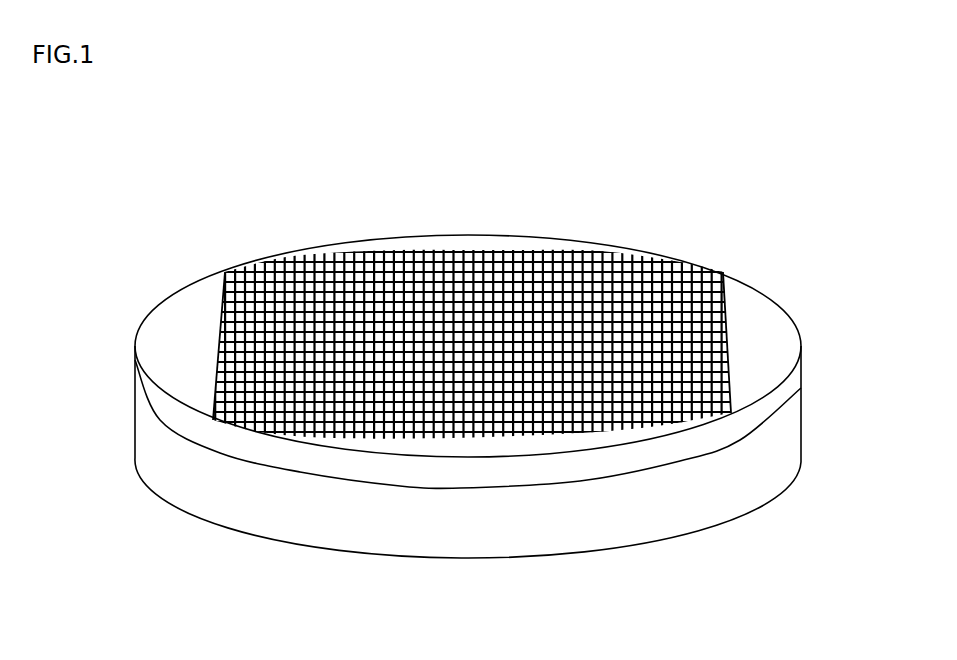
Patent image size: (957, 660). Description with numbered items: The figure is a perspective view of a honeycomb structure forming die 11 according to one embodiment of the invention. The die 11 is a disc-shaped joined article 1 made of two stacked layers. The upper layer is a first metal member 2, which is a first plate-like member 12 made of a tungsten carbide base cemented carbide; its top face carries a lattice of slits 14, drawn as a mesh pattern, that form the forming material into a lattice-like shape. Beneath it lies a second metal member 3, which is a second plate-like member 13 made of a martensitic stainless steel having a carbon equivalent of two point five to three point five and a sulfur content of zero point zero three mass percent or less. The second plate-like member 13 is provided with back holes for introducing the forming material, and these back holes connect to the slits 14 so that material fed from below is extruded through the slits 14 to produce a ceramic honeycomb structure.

The honeycomb structure forming die 11 is at (590, 142).
The joined article 1 is at (845, 357).
The first metal member 2 is at (802, 367).
The second metal member 3 is at (802, 423).
The first plate-like member 12 is at (582, 472).
The second plate-like member 13 is at (288, 512).
The slit 14 is at (461, 250).